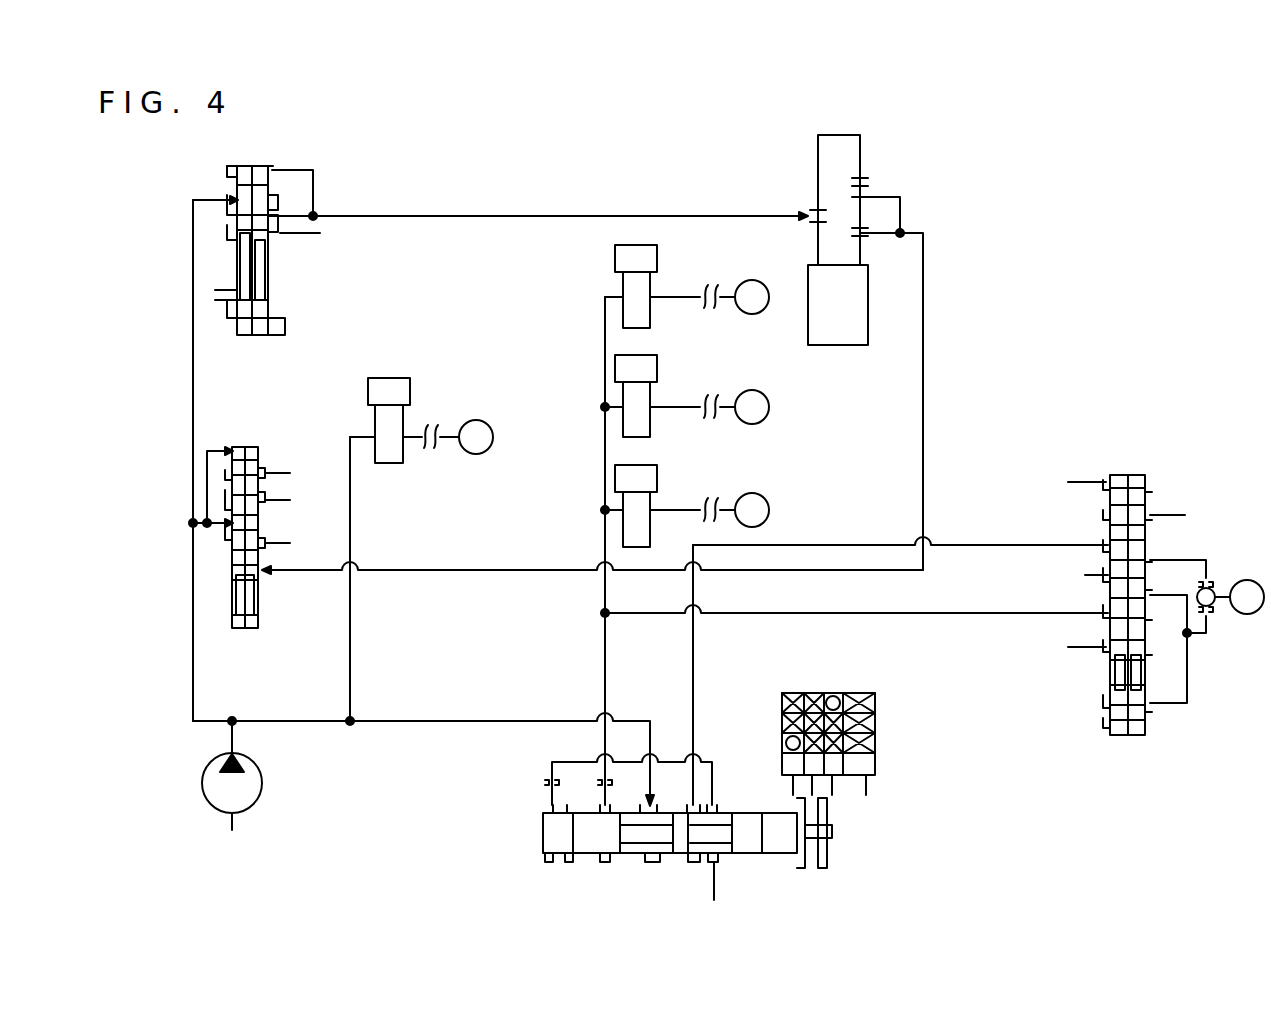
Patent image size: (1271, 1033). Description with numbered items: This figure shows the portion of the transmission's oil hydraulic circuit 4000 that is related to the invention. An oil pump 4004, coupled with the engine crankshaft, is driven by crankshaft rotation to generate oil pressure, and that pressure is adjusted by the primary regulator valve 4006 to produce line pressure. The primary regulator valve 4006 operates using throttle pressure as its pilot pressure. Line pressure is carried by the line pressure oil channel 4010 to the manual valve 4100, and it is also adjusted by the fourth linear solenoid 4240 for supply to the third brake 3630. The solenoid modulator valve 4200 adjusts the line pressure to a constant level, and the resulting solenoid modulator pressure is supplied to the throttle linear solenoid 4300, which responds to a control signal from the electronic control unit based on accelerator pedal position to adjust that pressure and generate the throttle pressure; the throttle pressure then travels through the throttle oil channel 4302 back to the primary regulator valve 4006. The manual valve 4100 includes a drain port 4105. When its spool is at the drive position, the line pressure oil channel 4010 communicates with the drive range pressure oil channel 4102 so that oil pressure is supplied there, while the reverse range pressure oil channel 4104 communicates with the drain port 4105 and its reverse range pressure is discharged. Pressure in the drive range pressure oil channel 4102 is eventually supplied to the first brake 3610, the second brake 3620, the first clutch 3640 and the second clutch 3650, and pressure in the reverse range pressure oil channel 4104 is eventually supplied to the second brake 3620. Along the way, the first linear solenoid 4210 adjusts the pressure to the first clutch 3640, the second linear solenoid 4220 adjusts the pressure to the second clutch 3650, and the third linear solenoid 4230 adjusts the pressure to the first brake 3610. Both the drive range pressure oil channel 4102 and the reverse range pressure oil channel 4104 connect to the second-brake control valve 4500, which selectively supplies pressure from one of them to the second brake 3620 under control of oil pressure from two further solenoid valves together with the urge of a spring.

The oil hydraulic circuit 4000 is at (598, 137).
The solenoid modulator valve 4200 is at (248, 345).
The primary regulator valve 4006 is at (243, 630).
The line pressure oil channel 4010 is at (298, 698).
The oil pump 4004 is at (262, 778).
The SL4 linear solenoid 4240 is at (385, 376).
The B3 brake 3630 is at (466, 418).
The SL1 linear solenoid 4210 is at (657, 265).
The C1 clutch 3640 is at (752, 278).
The SL2 linear solenoid 4220 is at (657, 375).
The C2 clutch 3650 is at (752, 388).
The SL3 linear solenoid 4230 is at (657, 480).
The B1 brake 3610 is at (752, 491).
The SLT linear solenoid 4300 is at (838, 346).
The SLT oil channel 4302 is at (925, 460).
The R range pressure oil channel 4104 is at (992, 545).
The D range pressure oil channel 4102 is at (992, 613).
The B2 control valve 4500 is at (1163, 487).
The B2 brake 3620 is at (1245, 615).
The manual valve 4100 is at (525, 840).
The drain port 4105 is at (728, 870).